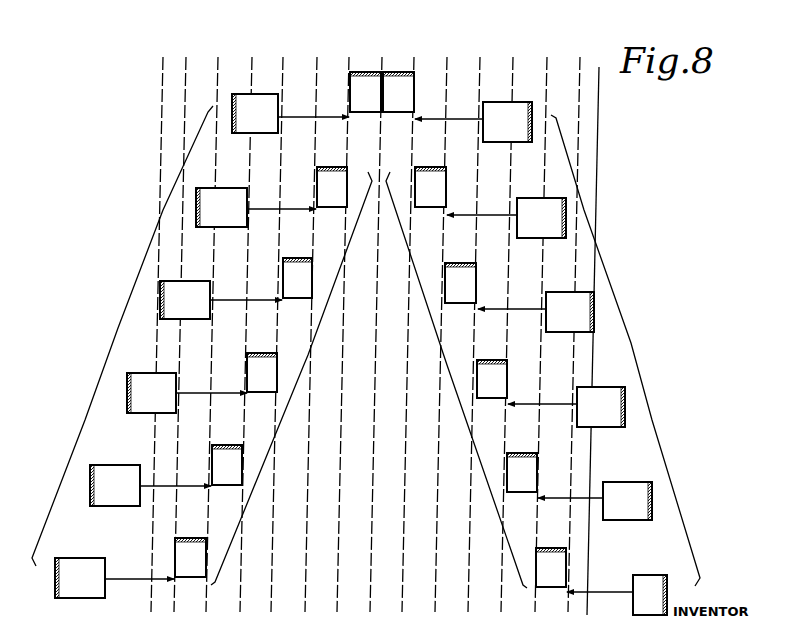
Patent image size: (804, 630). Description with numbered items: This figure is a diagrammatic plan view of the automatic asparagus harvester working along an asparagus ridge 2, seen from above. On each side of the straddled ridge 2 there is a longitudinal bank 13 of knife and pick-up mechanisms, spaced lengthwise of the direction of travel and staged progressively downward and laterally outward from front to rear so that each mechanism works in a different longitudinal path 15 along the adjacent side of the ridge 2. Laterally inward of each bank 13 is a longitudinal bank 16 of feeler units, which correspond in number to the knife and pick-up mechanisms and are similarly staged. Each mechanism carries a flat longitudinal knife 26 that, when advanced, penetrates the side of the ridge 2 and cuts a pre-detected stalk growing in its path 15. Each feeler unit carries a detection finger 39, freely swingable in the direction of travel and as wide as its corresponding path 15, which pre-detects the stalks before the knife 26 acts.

The asparagus ridge 2 is at (591, 148).
The longitudinal bank of knife and pick-up mechanisms 13 is at (118, 328).
The longitudinal paths 15 is at (232, 72).
The longitudinal bank of feeler units 16 is at (306, 364).
The knife 26 is at (197, 220).
The detection finger 39 is at (268, 376).